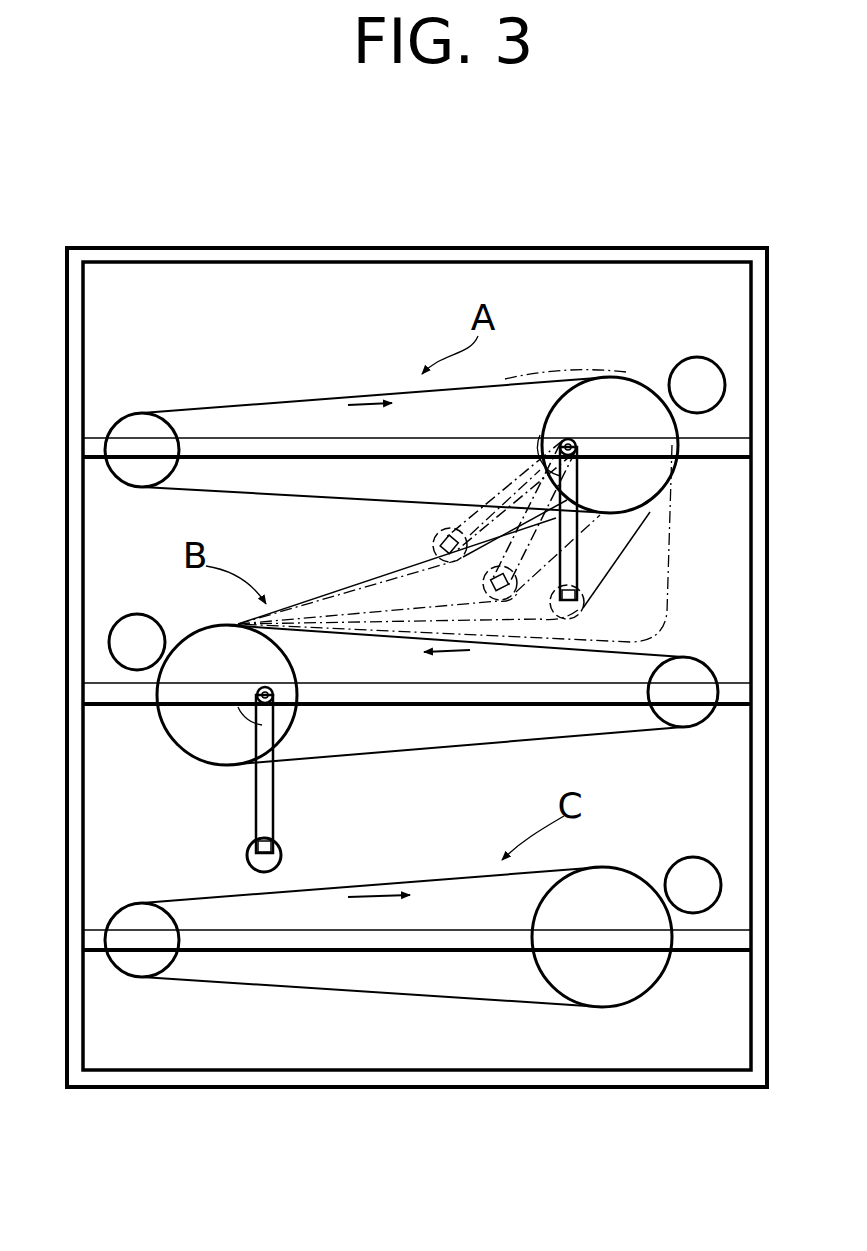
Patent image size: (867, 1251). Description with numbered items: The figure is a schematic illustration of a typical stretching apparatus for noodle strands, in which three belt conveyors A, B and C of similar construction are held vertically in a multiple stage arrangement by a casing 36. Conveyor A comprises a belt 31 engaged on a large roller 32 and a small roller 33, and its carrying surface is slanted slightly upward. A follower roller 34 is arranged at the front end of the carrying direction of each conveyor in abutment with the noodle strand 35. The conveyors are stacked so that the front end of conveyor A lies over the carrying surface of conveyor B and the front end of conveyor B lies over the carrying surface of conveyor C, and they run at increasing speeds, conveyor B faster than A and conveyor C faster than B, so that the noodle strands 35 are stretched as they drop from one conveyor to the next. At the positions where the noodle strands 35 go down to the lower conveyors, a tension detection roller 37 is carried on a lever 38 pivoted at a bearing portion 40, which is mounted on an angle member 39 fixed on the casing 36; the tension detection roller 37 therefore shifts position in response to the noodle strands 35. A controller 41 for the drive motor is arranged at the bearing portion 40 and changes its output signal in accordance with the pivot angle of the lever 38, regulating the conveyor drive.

The belt 31 is at (345, 498).
The large roller 32 is at (665, 482).
The small roller 33 is at (133, 436).
The follower roller 34 is at (698, 372).
The noodle strand 35 is at (572, 372).
The casing 36 is at (260, 247).
The tension detection roller 37 is at (283, 853).
The lever 38 is at (282, 797).
The angle member 39 is at (125, 697).
The bearing portion 40 is at (560, 440).
The controller 41 is at (588, 437).